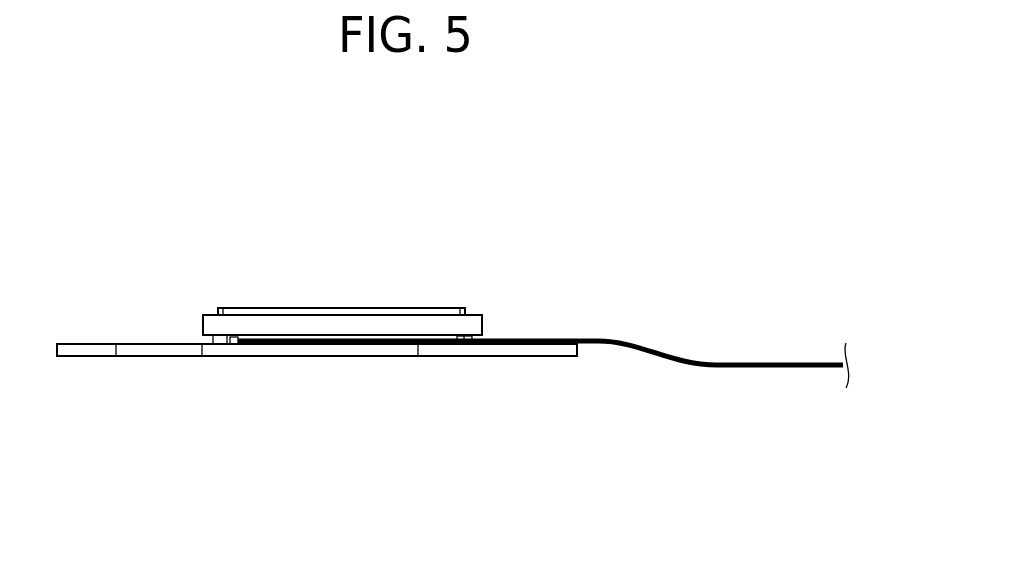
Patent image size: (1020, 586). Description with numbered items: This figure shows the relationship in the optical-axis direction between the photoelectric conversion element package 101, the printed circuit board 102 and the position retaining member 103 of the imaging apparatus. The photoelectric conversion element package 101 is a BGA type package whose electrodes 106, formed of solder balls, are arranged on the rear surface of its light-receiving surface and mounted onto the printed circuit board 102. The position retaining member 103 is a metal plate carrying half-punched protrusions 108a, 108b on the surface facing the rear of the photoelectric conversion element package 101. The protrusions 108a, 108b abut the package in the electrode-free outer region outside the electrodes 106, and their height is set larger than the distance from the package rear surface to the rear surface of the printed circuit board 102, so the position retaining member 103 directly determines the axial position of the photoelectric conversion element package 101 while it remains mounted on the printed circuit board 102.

The photoelectric conversion element package 101 is at (213, 328).
The printed circuit board 102 is at (598, 338).
The position retaining member 103 is at (155, 352).
The electrodes 106 is at (373, 335).
The protrusion 108a is at (227, 345).
The protrusion 108b is at (470, 345).